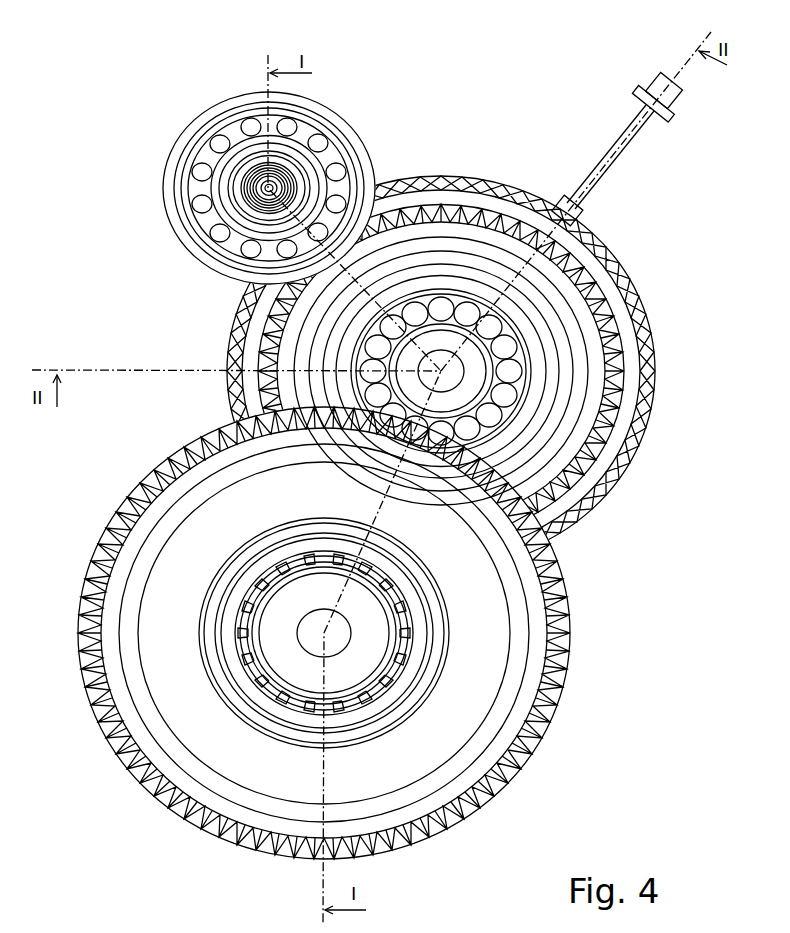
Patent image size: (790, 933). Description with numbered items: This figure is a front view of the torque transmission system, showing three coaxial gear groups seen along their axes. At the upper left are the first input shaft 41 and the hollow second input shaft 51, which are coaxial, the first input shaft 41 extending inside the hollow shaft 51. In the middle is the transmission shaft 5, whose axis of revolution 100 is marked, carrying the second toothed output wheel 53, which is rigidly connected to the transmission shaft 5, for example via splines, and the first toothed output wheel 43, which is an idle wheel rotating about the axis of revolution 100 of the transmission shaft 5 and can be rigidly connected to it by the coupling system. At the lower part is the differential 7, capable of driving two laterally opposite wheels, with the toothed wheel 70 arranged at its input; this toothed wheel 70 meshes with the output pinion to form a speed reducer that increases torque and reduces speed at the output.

The second input shaft 51 is at (269, 188).
The first input shaft 41 is at (272, 186).
The second toothed output wheel 53 is at (587, 282).
The first toothed output wheel 43 is at (642, 302).
The transmission shaft 5 is at (479, 371).
The axis of revolution 100 is at (441, 371).
The differential 7 is at (368, 624).
The toothed wheel 70 is at (542, 702).